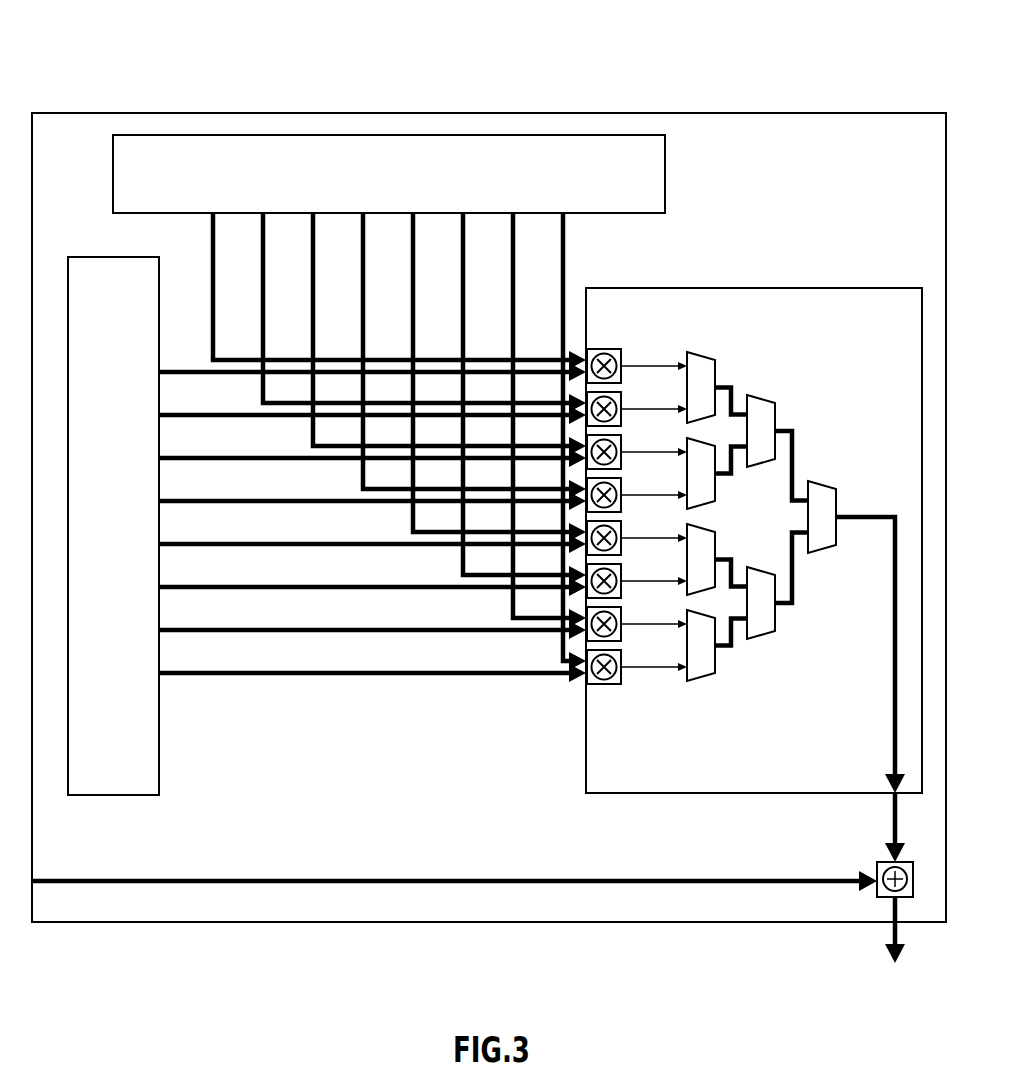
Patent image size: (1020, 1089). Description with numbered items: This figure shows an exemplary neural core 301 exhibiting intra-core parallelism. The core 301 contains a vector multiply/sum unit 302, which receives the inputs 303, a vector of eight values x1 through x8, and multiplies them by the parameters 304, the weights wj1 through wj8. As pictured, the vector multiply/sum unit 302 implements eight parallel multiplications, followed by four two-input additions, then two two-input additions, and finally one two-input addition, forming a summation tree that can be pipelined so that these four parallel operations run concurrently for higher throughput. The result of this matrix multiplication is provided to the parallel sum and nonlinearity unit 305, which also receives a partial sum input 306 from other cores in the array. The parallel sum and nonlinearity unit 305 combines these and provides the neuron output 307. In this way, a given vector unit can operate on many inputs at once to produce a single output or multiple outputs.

The core 301 is at (490, 113).
The vector multiply/sum unit 302 is at (755, 288).
The inputs 303 is at (160, 745).
The parameters 304 is at (665, 176).
The parallel sum and nonlinearity unit 305 is at (877, 862).
The partial sum input 306 is at (33, 878).
The neuron output 307 is at (897, 948).